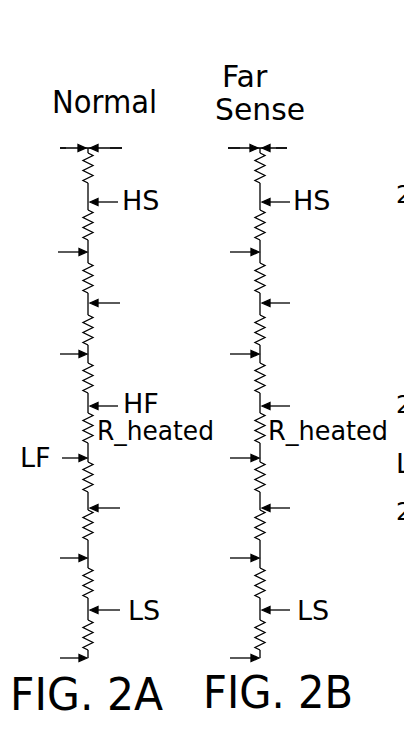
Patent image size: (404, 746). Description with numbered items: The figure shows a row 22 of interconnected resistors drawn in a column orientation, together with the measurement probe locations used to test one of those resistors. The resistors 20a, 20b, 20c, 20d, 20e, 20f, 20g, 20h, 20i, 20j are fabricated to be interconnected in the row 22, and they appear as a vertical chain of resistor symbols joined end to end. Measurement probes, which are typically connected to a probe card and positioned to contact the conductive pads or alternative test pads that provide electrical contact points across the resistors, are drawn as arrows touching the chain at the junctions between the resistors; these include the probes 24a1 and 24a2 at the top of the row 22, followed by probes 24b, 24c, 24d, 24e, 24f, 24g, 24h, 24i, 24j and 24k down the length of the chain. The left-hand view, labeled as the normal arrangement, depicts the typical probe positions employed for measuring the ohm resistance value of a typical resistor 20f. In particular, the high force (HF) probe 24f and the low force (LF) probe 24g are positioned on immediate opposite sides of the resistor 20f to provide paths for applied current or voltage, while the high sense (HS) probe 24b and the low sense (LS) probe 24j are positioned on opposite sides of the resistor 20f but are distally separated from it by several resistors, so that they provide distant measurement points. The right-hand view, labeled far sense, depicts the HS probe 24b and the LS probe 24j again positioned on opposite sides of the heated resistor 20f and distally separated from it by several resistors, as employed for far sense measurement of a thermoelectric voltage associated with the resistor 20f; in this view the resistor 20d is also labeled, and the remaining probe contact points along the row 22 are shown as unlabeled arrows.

In FIG. 2A, the row 22 is at (105, 82).
In FIG. 2A, the measurement probe 24a1 is at (67, 148).
In FIG. 2B, the measurement probe 24a1 is at (242, 147).
In FIG. 2A, the measurement probe 24a2 is at (110, 148).
In FIG. 2B, the measurement probe 24a2 is at (278, 148).
In FIG. 2A, the high sense probe 24b is at (112, 200).
In FIG. 2B, the high sense probe 24b is at (280, 200).
In FIG. 2A, the measurement probe 24c is at (70, 252).
In FIG. 2A, the measurement probe 24d is at (108, 303).
In FIG. 2A, the measurement probe 24e is at (68, 352).
In FIG. 2A, the high force probe 24f is at (108, 405).
In FIG. 2A, the low force probe 24g is at (73, 460).
In FIG. 2A, the measurement probe 24h is at (110, 507).
In FIG. 2A, the measurement probe 24i is at (70, 560).
In FIG. 2A, the low sense probe 24j is at (110, 610).
In FIG. 2B, the low sense probe 24j is at (282, 607).
In FIG. 2A, the measurement probe 24k is at (70, 658).
In FIG. 2A, the resistor 20a is at (93, 180).
In FIG. 2A, the resistor 20b is at (93, 222).
In FIG. 2A, the resistor 20c is at (94, 268).
In FIG. 2A, the resistor 20d is at (93, 320).
In FIG. 2B, the resistor 20d is at (265, 320).
In FIG. 2A, the resistor 20e is at (85, 384).
In FIG. 2A, the resistor 20f is at (86, 423).
In FIG. 2B, the resistor 20f is at (262, 443).
In FIG. 2A, the resistor 20g is at (93, 477).
In FIG. 2A, the resistor 20h is at (92, 518).
In FIG. 2A, the resistor 20i is at (92, 578).
In FIG. 2A, the resistor 20j is at (96, 644).